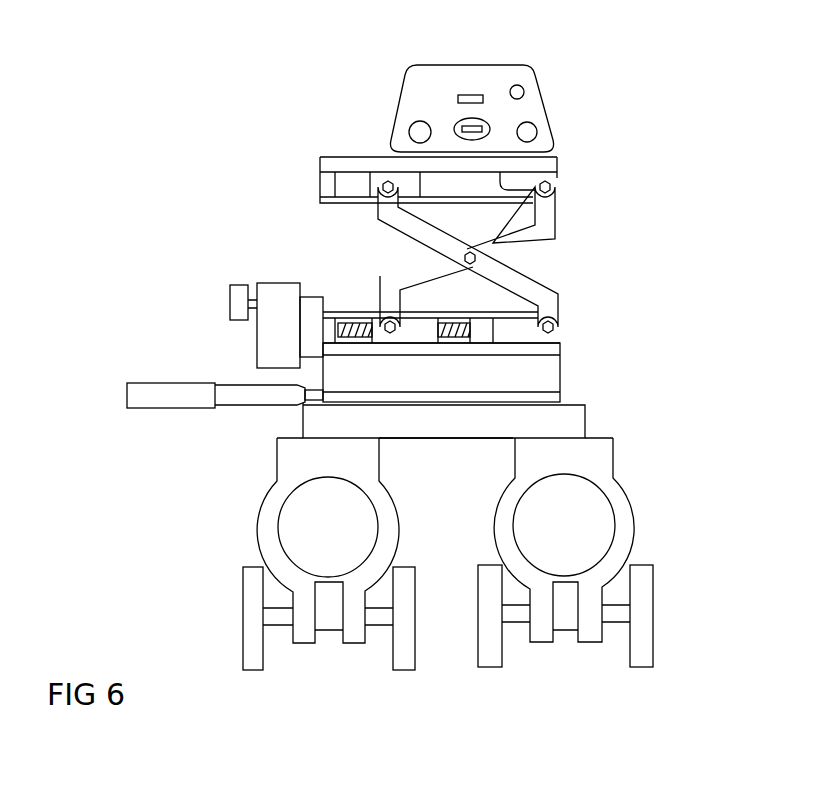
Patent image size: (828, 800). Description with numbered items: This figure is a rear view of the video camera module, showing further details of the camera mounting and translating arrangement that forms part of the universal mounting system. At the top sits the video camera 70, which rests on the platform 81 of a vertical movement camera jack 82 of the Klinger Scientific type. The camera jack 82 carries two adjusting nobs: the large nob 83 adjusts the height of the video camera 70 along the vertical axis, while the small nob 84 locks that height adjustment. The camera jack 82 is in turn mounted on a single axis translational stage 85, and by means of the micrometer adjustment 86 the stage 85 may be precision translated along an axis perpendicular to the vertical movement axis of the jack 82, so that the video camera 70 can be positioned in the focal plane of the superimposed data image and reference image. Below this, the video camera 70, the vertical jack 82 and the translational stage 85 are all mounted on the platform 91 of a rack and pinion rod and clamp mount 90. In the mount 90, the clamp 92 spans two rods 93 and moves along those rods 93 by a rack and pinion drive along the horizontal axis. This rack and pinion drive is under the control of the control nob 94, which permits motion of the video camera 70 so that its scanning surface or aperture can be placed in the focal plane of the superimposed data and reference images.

The video camera 70 is at (545, 92).
The platform 81 is at (342, 163).
The vertical movement camera jack 82 is at (344, 251).
The large nob 83 is at (270, 285).
The small nob 84 is at (230, 298).
The single axis translational stage 85 is at (556, 370).
The micrometer adjustment 86 is at (140, 392).
The rack and pinion rod and clamp mount 90 is at (424, 536).
The platform 91 is at (304, 416).
The clamp 92 is at (398, 522).
The rods 93 is at (313, 532).
The control nob 94 is at (247, 601).